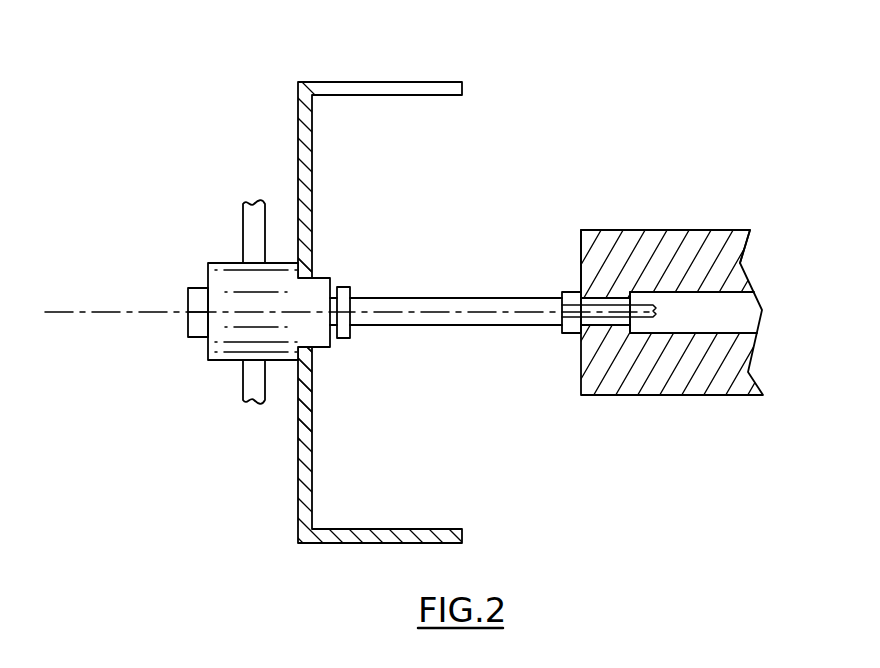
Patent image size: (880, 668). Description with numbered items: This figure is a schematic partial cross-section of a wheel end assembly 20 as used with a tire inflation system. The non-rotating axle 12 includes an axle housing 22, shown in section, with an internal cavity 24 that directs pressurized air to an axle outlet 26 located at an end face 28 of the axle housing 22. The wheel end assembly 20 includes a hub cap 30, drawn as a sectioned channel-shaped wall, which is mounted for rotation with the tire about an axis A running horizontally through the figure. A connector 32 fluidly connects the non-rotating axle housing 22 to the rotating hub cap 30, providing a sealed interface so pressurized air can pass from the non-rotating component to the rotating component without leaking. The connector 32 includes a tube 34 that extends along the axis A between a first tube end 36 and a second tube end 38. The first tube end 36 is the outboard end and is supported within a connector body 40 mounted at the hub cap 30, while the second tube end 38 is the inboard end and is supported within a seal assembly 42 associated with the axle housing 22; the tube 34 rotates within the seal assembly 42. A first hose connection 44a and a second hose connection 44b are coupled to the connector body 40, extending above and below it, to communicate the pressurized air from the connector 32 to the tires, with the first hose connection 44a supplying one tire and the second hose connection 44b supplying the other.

The axle 12 is at (742, 263).
The wheel end assembly 20 is at (510, 243).
The axle housing 22 is at (668, 298).
The internal cavity 24 is at (728, 322).
The axle outlet 26 is at (571, 335).
The end face 28 is at (582, 248).
The hub cap 30 is at (386, 90).
The connector 32 is at (235, 304).
The tube 34 is at (453, 326).
The first tube end 36 is at (352, 326).
The second tube end 38 is at (640, 304).
The connector body 40 is at (237, 282).
The seal assembly 42 is at (600, 300).
The first hose connection 44a is at (243, 218).
The second hose connection 44b is at (245, 380).
The axis A is at (112, 312).